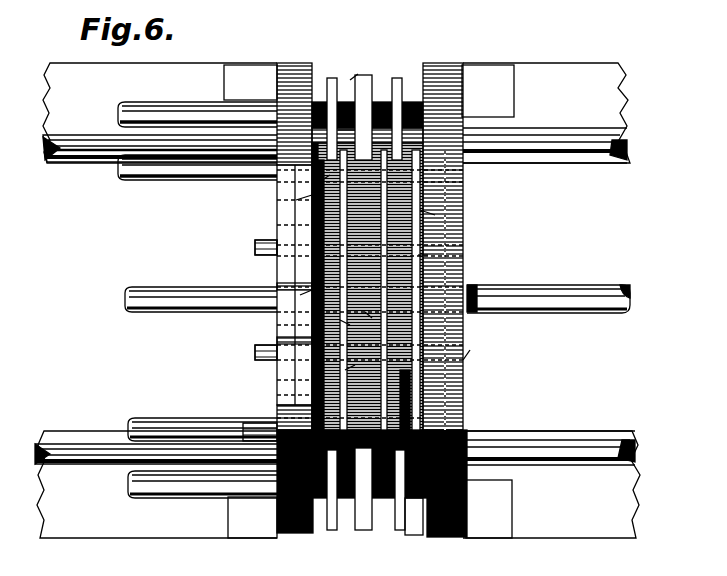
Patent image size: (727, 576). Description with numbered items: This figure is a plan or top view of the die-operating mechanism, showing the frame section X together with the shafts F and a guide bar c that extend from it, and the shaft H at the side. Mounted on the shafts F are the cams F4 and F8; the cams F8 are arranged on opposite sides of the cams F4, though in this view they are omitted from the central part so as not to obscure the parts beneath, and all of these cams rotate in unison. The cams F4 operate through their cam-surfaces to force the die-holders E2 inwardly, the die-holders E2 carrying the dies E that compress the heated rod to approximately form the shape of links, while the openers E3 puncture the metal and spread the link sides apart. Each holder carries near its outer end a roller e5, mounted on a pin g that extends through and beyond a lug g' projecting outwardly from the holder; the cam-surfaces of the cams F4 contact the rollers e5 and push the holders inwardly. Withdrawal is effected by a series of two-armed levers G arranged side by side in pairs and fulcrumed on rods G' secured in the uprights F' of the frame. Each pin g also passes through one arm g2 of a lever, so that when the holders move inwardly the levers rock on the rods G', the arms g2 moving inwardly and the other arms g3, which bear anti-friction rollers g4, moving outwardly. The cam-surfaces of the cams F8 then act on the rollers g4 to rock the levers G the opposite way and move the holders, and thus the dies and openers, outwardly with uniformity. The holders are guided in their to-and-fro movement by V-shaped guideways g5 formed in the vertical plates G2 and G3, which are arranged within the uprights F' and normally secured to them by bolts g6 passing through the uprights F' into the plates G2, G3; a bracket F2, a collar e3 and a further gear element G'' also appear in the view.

The frame section X is at (338, 303).
The shaft F is at (197, 299).
The upright F' is at (367, 341).
The bracket F2 is at (411, 516).
The cam F4 is at (363, 75).
The cam F8 is at (332, 78).
The guide bar c is at (565, 472).
The bolt g6 is at (477, 84).
The shaft H is at (586, 313).
The lever G is at (345, 295).
The rod G' is at (237, 295).
The gear G'' is at (256, 261).
The plate G2 is at (464, 223).
The plate G3 is at (280, 180).
The die E is at (348, 73).
The die-holder E2 is at (340, 120).
The opener E3 is at (465, 190).
The collar e3 is at (370, 324).
The pin g is at (323, 241).
The lug g' is at (370, 247).
The arm g2 is at (344, 325).
The arm g3 is at (363, 306).
The anti-friction roller g4 is at (488, 381).
The guideway g5 is at (430, 200).
The roller e5 is at (408, 290).